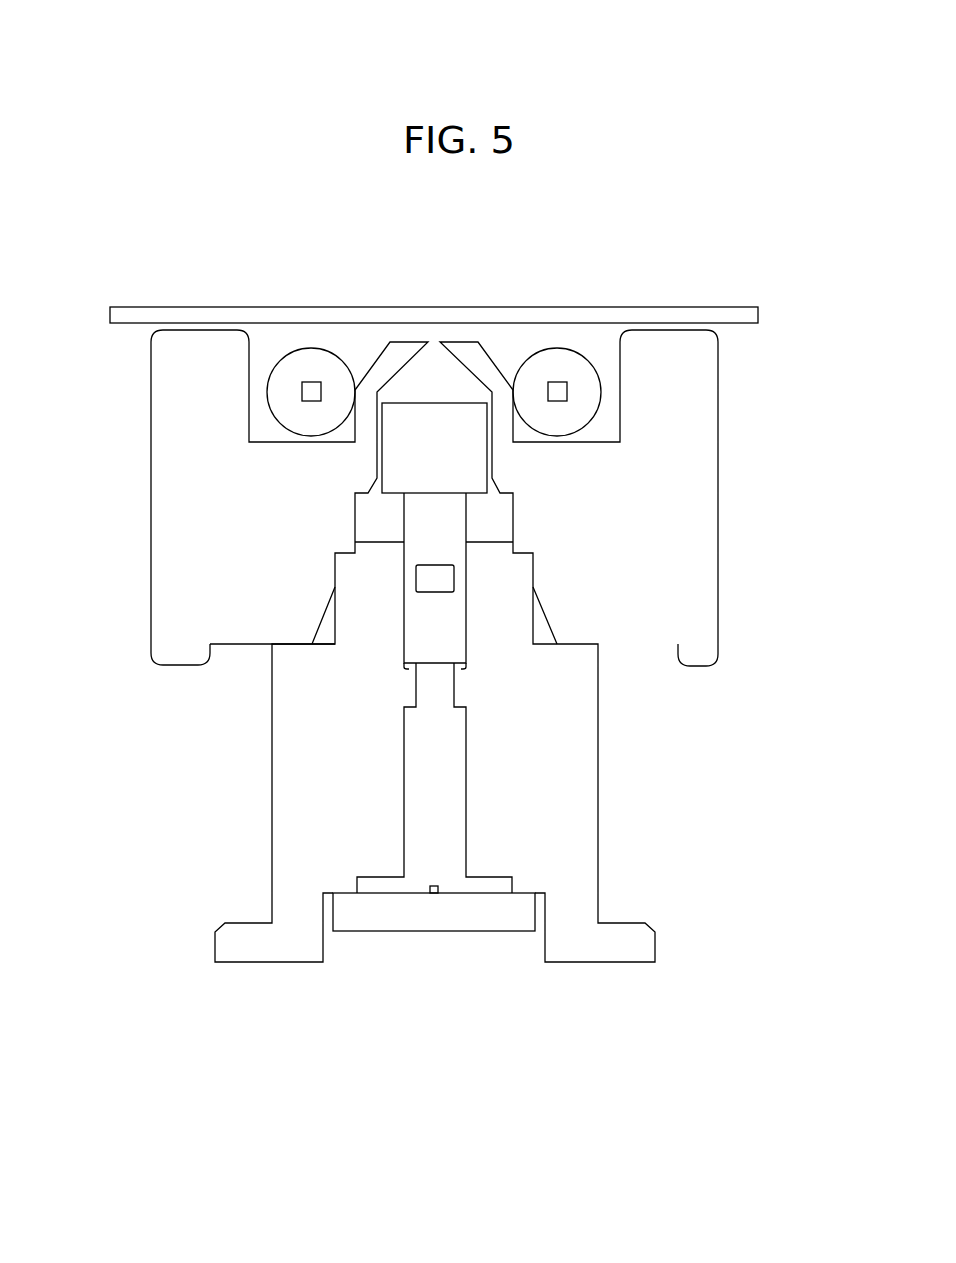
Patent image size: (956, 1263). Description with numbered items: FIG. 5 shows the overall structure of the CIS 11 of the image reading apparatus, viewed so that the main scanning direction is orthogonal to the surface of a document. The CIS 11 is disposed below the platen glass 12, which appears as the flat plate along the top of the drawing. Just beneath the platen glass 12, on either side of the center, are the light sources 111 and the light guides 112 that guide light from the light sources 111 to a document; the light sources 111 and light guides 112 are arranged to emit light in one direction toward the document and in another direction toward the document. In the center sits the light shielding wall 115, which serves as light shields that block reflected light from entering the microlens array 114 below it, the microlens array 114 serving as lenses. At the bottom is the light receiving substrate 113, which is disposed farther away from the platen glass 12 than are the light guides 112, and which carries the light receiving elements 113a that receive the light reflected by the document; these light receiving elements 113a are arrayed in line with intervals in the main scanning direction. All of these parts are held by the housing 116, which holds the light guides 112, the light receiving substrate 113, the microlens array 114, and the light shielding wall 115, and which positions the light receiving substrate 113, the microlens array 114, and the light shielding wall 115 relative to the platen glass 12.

The CIS 11 is at (212, 1024).
The platen glass 12 is at (592, 307).
The light source 111 is at (302, 392).
The light guide 112 is at (280, 357).
The light receiving substrate 113 is at (388, 932).
The light receiving element 113a is at (434, 886).
The microlens array 114 is at (466, 520).
The light shielding wall 115 is at (490, 458).
The housing 116 is at (598, 753).